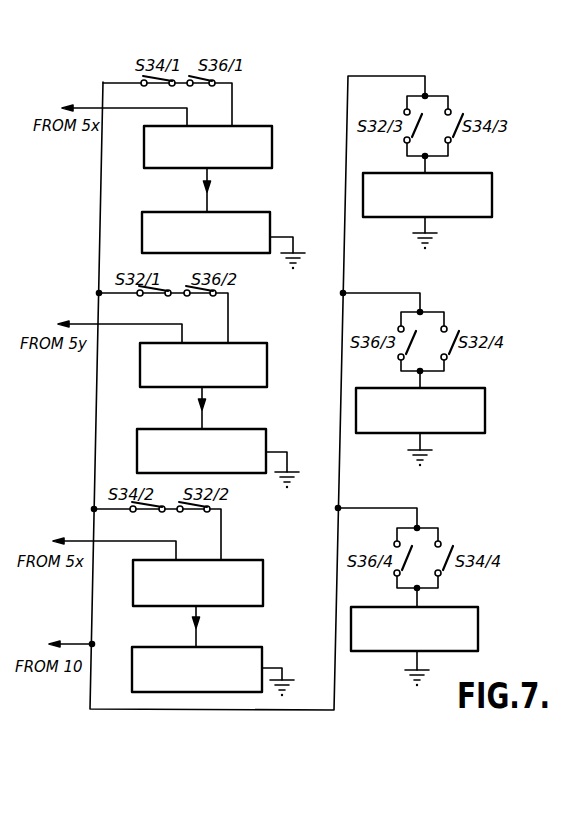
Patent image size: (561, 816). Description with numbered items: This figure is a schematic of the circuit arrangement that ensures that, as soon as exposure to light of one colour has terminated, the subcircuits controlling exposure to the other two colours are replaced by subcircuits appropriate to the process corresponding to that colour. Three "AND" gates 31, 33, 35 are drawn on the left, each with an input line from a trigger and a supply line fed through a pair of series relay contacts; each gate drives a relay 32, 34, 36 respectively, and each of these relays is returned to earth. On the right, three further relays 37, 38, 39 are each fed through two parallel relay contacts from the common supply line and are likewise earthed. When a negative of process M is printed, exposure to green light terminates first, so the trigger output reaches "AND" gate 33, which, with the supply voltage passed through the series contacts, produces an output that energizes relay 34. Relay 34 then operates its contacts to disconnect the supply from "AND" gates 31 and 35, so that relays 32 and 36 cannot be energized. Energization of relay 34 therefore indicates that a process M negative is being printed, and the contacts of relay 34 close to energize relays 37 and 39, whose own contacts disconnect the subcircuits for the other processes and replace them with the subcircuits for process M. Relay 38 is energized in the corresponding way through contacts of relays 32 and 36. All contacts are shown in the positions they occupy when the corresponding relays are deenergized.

The "AND" gate 31 is at (256, 126).
The relay 32 is at (270, 213).
The "AND" gate 33 is at (261, 343).
The relay 34 is at (266, 431).
The "AND" gate 35 is at (263, 561).
The relay 36 is at (262, 649).
The relay 37 is at (492, 175).
The relay 38 is at (485, 392).
The relay 39 is at (478, 624).